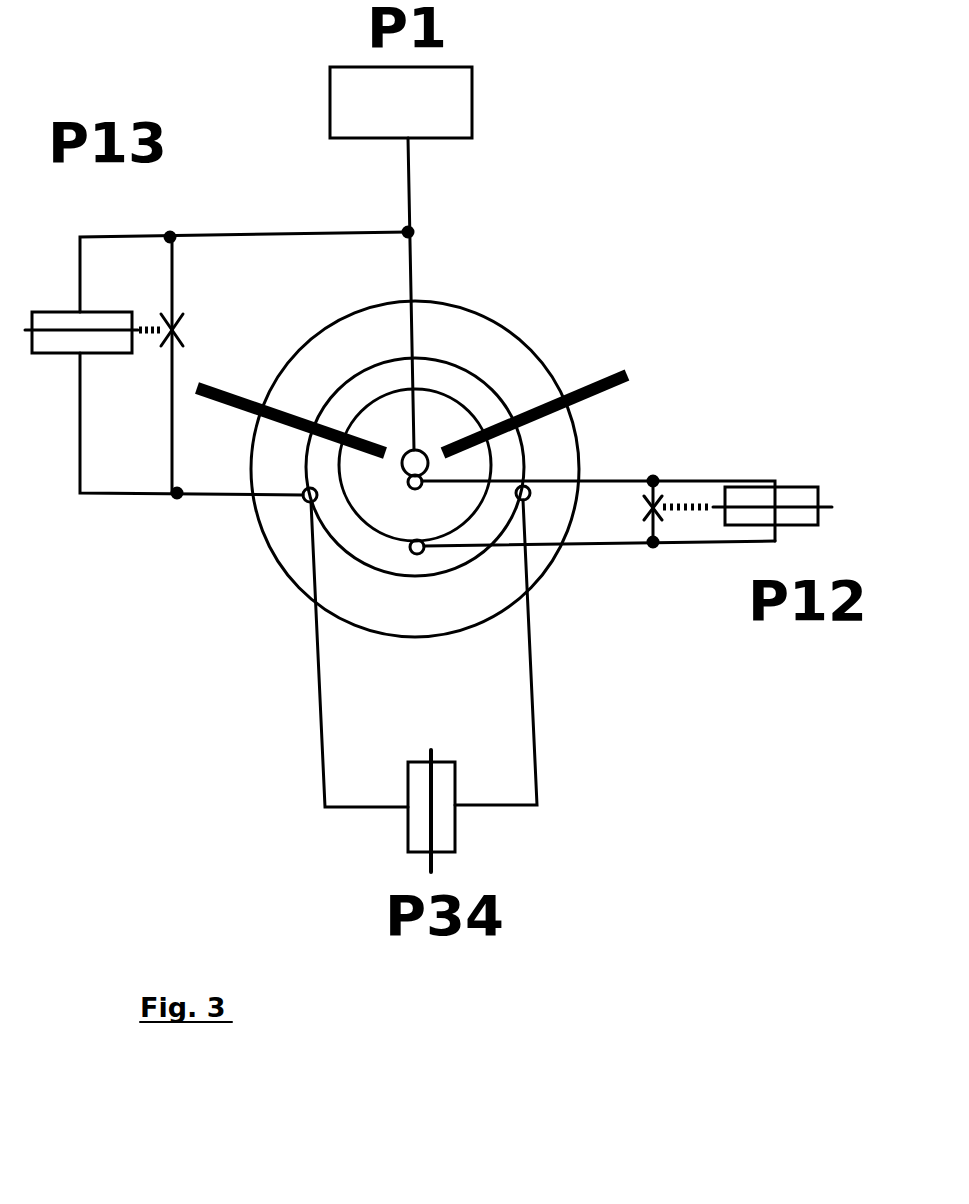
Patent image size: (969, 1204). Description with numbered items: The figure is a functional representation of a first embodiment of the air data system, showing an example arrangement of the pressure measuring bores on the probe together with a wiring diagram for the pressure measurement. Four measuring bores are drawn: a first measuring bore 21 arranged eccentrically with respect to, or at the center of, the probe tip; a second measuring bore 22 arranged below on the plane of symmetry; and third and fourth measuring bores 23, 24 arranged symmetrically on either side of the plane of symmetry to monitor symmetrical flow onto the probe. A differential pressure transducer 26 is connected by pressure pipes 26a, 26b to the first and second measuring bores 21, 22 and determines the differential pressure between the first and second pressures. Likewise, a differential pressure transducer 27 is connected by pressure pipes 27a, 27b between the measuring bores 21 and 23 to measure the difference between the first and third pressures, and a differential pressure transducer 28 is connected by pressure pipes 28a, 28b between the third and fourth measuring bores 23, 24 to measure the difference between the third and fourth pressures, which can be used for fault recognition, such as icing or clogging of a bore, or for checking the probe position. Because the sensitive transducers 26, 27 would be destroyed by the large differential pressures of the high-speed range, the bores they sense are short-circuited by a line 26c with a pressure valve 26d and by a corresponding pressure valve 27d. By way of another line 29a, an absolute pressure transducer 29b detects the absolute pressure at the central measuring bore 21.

The first measuring bore 21 is at (410, 487).
The second measuring bore 22 is at (412, 553).
The third measuring bore 23 is at (305, 501).
The fourth measuring bore 24 is at (542, 480).
The differential pressure transducer 26 is at (795, 493).
The pressure pipe 26a is at (708, 477).
The pressure pipe 26b is at (713, 543).
The line 26c is at (658, 523).
The pressure valve 26d is at (650, 513).
The differential pressure transducer 27 is at (53, 355).
The pressure pipe 27a is at (80, 273).
The pressure pipe 27b is at (85, 385).
The pressure valve 27d is at (180, 317).
The differential pressure transducer 28 is at (418, 833).
The pressure pipe 28a is at (323, 770).
The pressure pipe 28b is at (523, 807).
The line 29a is at (412, 195).
The absolute pressure transducer 29b is at (462, 82).